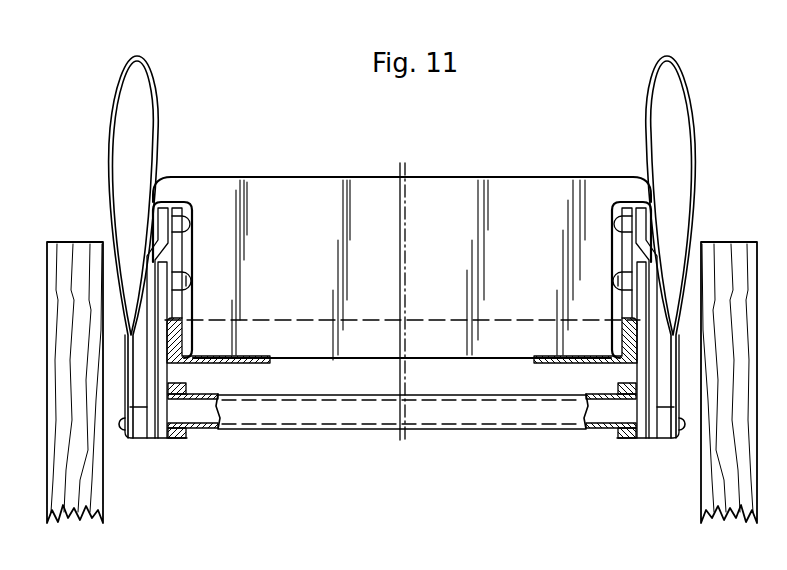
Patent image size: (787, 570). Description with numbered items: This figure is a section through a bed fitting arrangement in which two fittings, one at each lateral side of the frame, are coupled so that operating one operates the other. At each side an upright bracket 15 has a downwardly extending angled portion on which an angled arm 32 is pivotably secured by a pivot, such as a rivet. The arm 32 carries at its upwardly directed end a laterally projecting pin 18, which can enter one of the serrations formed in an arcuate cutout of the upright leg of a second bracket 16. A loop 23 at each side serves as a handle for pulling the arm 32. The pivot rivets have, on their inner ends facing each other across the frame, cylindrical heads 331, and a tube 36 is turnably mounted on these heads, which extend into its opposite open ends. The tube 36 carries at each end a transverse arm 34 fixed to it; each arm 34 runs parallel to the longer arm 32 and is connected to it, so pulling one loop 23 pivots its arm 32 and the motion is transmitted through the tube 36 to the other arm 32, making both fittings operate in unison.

The bracket 15 is at (155, 250).
The bracket 16 is at (180, 212).
The pin 18 is at (188, 278).
The loop 23 is at (152, 90).
The angled arm 32 is at (165, 310).
The arm 34 is at (175, 442).
The cylindrical head 331 is at (188, 432).
The tube 36 is at (307, 432).